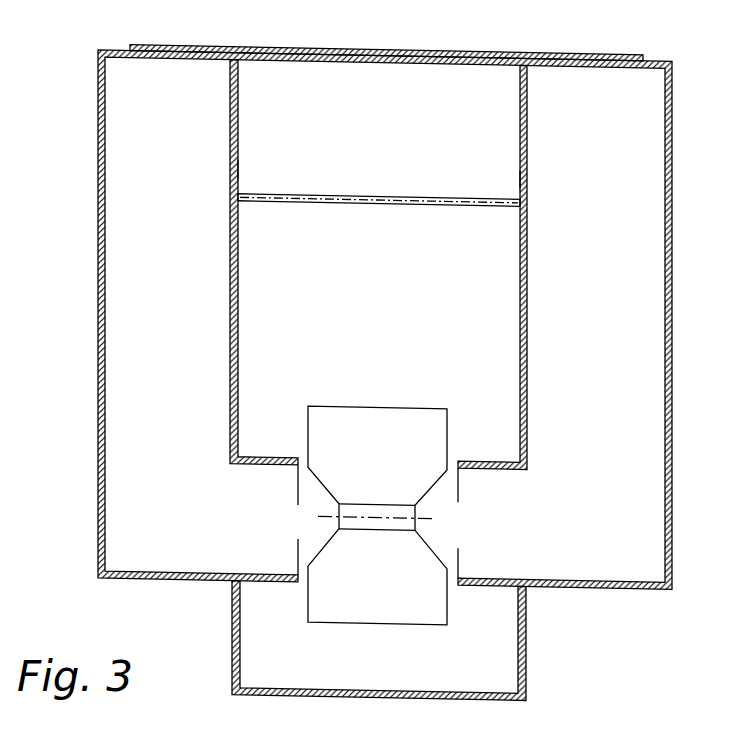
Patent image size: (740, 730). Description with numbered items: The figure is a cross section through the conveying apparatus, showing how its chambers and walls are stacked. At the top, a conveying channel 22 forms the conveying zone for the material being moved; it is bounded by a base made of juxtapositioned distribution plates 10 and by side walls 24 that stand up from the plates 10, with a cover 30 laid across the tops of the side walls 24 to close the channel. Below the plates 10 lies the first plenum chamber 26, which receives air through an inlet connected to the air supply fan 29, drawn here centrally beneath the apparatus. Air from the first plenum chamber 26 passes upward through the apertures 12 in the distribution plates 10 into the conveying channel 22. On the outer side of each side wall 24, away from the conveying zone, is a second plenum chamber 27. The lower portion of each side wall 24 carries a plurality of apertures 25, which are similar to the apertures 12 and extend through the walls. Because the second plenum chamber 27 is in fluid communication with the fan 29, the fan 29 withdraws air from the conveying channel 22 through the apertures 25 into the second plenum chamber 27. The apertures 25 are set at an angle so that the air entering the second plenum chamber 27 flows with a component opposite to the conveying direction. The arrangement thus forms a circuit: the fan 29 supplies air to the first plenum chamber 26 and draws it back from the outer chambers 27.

The distribution plates 10 is at (412, 196).
The apertures 12 is at (318, 197).
The conveying channel 22 is at (410, 82).
The side walls 24 is at (240, 97).
The apertures 25 is at (238, 163).
The first plenum chamber 26 is at (392, 341).
The second plenum chamber 27 is at (172, 365).
The air supply fan 29 is at (392, 457).
The cover 30 is at (260, 42).